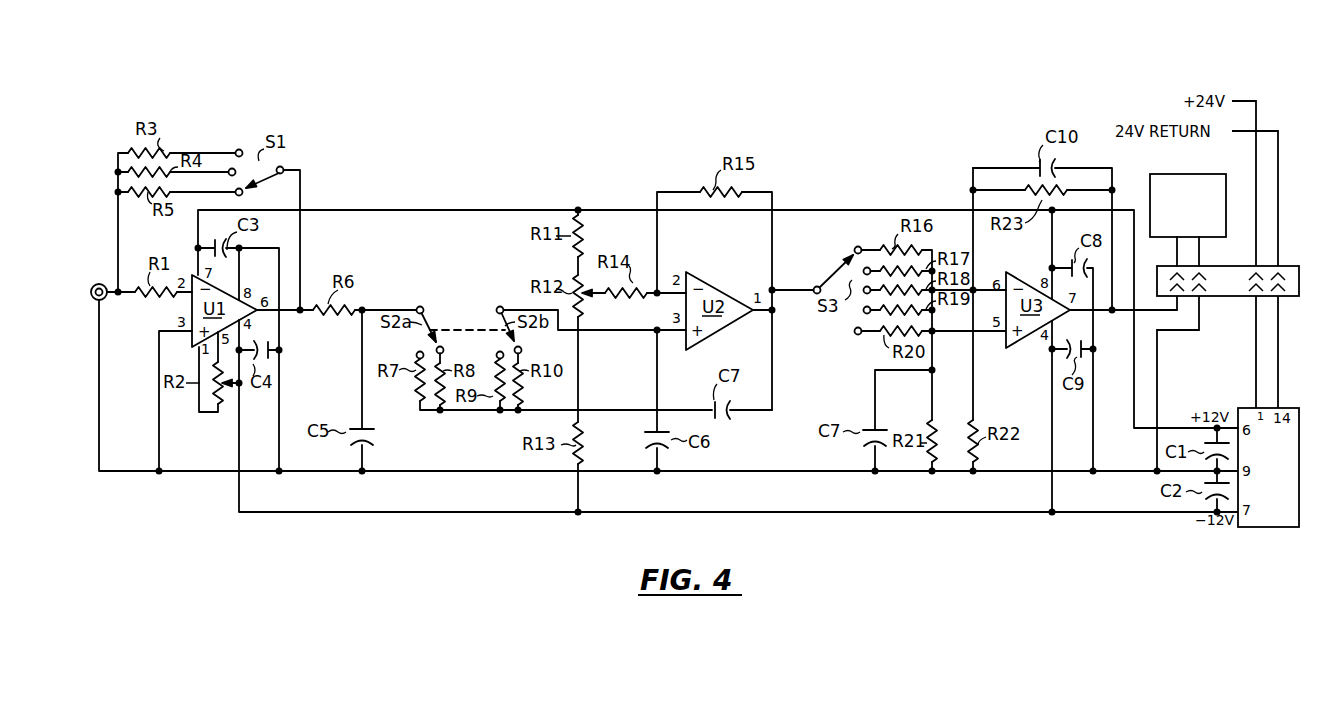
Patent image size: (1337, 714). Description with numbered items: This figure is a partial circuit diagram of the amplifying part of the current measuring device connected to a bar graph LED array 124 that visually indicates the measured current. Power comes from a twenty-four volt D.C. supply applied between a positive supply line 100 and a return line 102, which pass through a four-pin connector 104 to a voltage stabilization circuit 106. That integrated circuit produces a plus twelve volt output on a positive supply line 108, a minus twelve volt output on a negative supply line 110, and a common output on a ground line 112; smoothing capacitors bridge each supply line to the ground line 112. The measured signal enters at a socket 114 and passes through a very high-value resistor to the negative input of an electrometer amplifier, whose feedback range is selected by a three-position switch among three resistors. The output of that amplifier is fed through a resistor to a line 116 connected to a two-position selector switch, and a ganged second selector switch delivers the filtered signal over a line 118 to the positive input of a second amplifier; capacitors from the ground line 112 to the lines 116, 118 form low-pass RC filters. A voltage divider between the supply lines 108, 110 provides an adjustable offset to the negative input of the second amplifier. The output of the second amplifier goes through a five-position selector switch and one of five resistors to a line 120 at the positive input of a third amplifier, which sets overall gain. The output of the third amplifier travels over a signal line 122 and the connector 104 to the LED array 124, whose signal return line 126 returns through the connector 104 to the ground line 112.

The positive supply line 100 is at (1256, 388).
The return line 102 is at (1278, 388).
The four-pin connector 104 is at (1232, 297).
The voltage stabilization circuit 106 is at (1262, 527).
The positive supply line 108 is at (845, 210).
The negative supply line 110 is at (980, 513).
The ground line 112 is at (832, 471).
The socket 114 is at (106, 262).
The line 116 is at (384, 310).
The line 118 is at (614, 330).
The line 120 is at (991, 332).
The signal line 122 is at (1154, 310).
The bar graph LED array 124 is at (1187, 174).
The signal return line 126 is at (1157, 360).